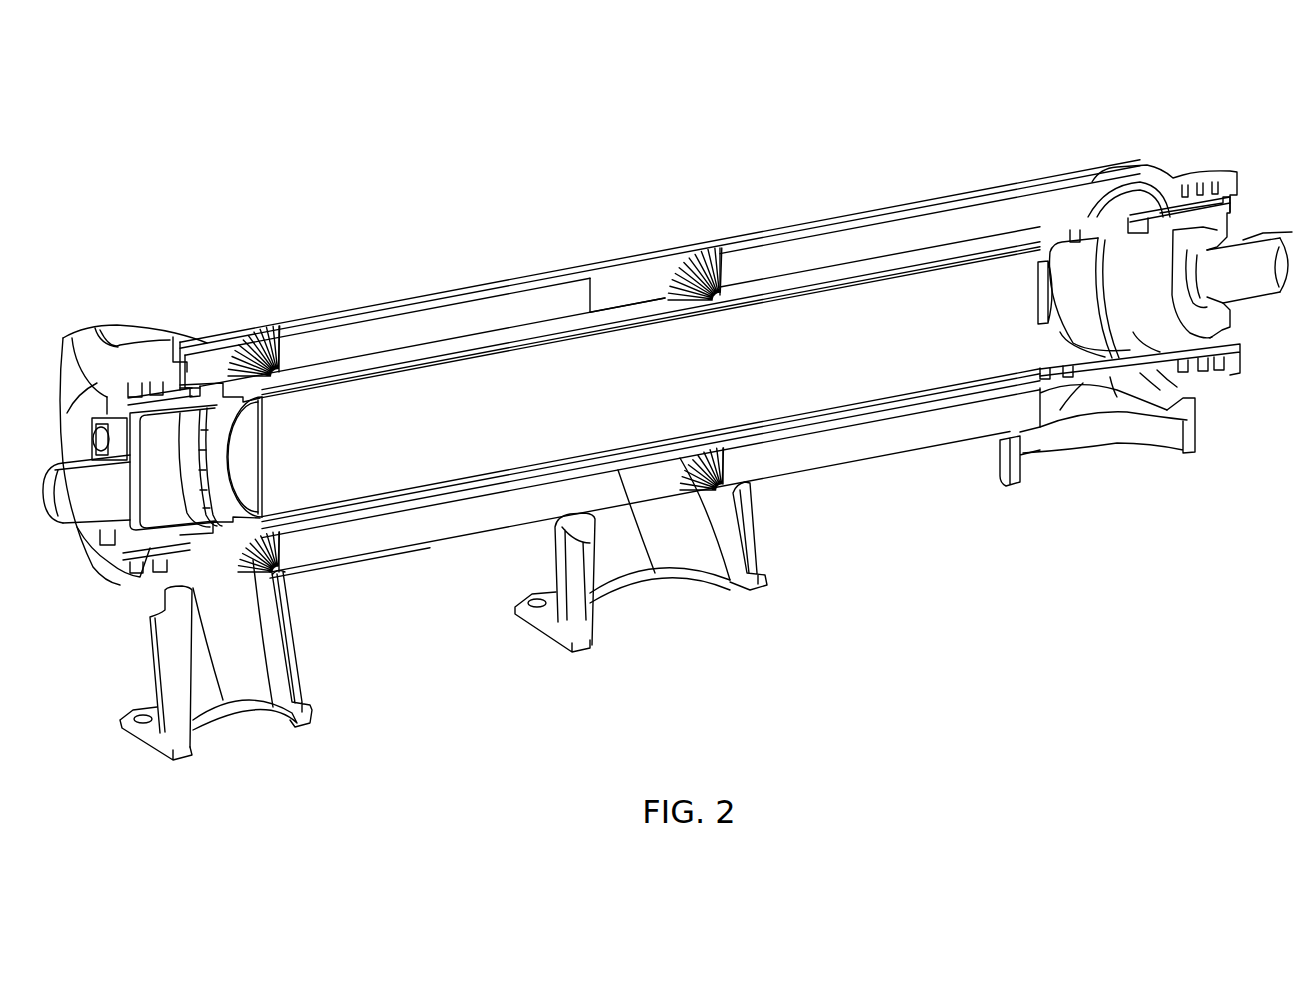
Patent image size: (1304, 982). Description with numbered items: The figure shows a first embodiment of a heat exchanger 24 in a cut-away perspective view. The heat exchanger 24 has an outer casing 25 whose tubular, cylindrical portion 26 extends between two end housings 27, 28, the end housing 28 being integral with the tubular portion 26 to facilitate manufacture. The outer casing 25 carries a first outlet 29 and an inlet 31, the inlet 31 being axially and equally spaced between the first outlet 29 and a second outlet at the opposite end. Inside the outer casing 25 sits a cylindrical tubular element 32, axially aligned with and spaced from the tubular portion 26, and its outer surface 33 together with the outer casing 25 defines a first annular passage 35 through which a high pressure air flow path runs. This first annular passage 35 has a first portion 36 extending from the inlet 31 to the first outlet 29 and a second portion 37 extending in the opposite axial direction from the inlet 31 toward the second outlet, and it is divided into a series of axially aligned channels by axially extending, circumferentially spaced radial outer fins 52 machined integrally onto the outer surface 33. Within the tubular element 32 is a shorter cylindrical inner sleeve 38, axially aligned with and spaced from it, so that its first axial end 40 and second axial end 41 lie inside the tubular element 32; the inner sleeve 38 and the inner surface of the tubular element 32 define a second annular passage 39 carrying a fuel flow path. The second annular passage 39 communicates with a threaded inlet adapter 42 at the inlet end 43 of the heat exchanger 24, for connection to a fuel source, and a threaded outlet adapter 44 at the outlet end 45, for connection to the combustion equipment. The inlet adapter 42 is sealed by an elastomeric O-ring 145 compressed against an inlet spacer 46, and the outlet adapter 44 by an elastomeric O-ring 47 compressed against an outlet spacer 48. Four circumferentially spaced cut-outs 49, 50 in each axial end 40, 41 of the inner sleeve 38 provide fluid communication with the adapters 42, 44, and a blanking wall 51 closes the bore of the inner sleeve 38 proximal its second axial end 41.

The heat exchanger 24 is at (970, 112).
The outer casing 25 is at (287, 320).
The tubular portion 26 is at (642, 256).
The end housing 27 is at (147, 355).
The end housing 28 is at (1172, 178).
The first outlet 29 is at (1103, 422).
The inlet 31 is at (750, 531).
The tubular element 32 is at (743, 290).
The outer surface 33 is at (810, 430).
The first annular passage 35 is at (627, 283).
The first portion 36 is at (932, 225).
The second portion 37 is at (415, 323).
The inner sleeve 38 is at (882, 372).
The second annular passage 39 is at (440, 487).
The first axial end 40 is at (1050, 352).
The second axial end 41 is at (150, 548).
The inlet adapter 42 is at (1212, 223).
The inlet end 43 is at (1246, 410).
The outlet adapter 44 is at (130, 427).
The outlet end 45 is at (30, 542).
The inlet spacer 46 is at (1092, 230).
The elastomeric O-ring 47 is at (192, 396).
The outlet spacer 48 is at (250, 545).
The cut-out 49 is at (1040, 283).
The cut-out 50 is at (215, 480).
The blanking wall 51 is at (265, 453).
The radial outer fins 52 is at (700, 255).
The elastomeric O-ring 145 is at (1177, 200).